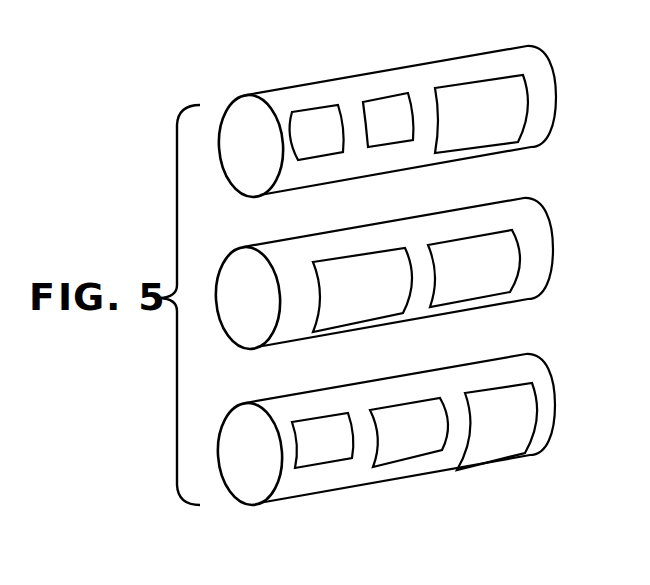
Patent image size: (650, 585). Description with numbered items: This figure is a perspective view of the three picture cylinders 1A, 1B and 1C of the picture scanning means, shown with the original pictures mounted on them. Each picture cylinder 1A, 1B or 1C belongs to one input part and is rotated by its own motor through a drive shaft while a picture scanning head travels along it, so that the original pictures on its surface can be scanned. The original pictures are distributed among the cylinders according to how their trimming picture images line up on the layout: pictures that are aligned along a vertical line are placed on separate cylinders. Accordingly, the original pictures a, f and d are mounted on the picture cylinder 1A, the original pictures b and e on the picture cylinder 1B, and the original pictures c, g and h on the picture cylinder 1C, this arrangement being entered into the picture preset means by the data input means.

The picture cylinder 1A is at (514, 48).
The picture cylinder 1B is at (511, 200).
The picture cylinder 1C is at (513, 357).